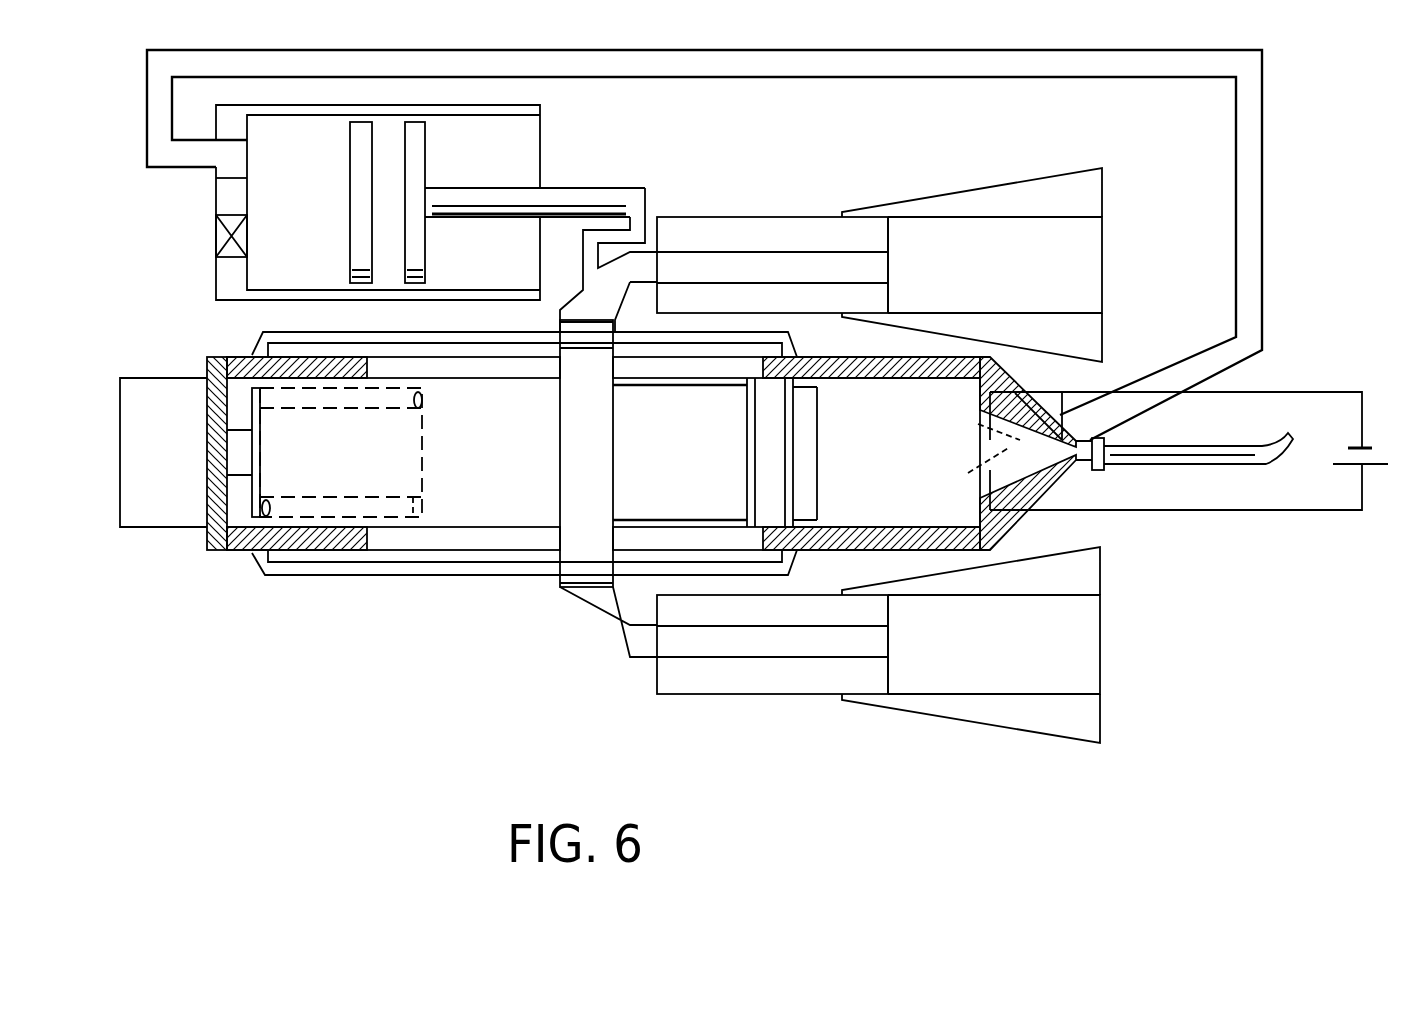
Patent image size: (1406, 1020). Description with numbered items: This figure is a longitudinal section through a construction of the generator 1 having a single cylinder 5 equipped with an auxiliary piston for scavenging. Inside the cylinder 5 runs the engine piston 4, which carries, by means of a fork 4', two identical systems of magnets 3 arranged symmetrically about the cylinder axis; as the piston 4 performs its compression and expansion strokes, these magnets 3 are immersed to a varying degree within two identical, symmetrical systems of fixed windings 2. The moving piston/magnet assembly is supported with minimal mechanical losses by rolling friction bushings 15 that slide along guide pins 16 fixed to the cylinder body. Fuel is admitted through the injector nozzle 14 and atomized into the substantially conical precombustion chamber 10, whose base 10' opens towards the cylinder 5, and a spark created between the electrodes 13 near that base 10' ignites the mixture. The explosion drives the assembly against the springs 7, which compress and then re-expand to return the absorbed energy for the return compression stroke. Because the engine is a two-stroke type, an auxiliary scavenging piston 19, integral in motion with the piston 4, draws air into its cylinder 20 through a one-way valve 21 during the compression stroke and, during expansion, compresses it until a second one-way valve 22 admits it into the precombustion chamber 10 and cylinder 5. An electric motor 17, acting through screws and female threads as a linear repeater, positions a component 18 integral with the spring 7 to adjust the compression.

The generator 1 is at (708, 432).
The fixed windings 2 is at (1033, 203).
The magnets 3 is at (748, 228).
The piston 4 is at (736, 452).
The fork 4' is at (606, 631).
The cylinder 5 is at (841, 429).
The springs 7 is at (424, 398).
The precombustion chamber 10 is at (1070, 454).
The base of the precombustion chamber 10' is at (965, 425).
The electrodes 13 is at (968, 473).
The injector nozzle 14 is at (1192, 450).
The rolling friction bushings 15 is at (558, 577).
The guide pins 16 is at (368, 568).
The electric motor 17 is at (152, 487).
The component integral with the spring 18 is at (252, 453).
The auxiliary scavenging piston 19 is at (392, 162).
The cylinder of the auxiliary piston 20 is at (298, 173).
The one-way valve 21 is at (218, 232).
The second one-way valve 22 is at (1098, 428).